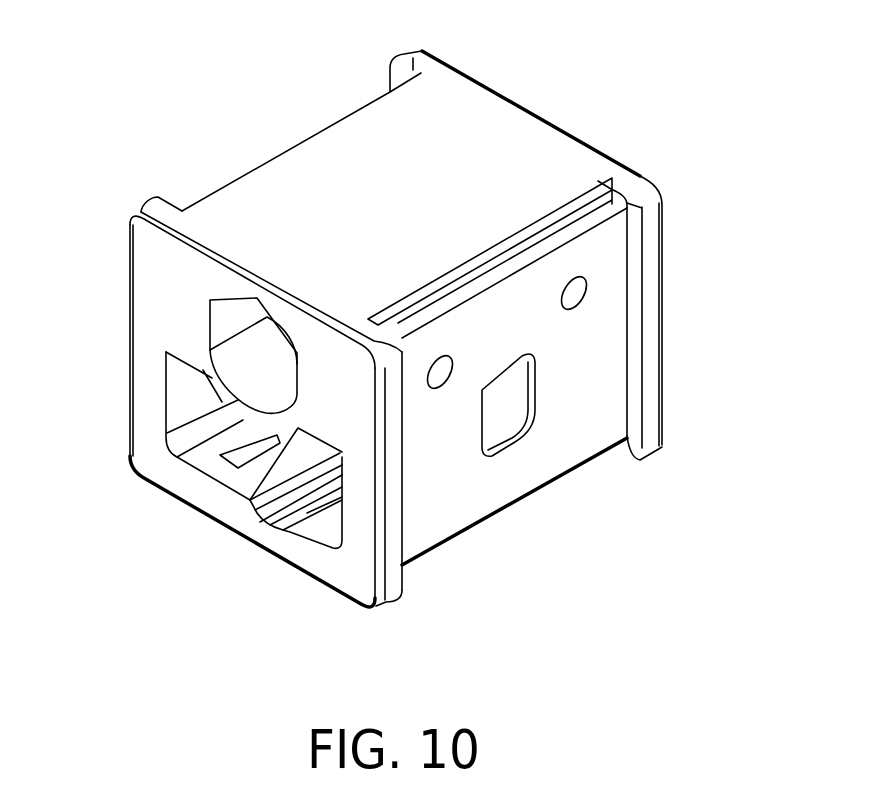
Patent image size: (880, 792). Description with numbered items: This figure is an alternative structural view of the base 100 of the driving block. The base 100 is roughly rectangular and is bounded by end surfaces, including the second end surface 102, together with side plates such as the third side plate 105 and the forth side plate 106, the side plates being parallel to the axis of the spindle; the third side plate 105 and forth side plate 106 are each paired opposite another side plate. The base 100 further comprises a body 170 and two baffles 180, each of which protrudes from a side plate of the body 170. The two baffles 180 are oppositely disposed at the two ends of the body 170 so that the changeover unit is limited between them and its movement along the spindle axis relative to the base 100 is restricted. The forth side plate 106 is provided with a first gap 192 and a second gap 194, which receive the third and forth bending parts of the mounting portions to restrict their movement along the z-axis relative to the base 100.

The base 100 is at (397, 347).
The second end surface 102 is at (150, 290).
The third side plate 105 is at (435, 526).
The forth side plate 106 is at (498, 133).
The body 170 is at (560, 477).
The baffles 180 is at (663, 425).
The first gap 192 is at (218, 172).
The second gap 194 is at (585, 204).